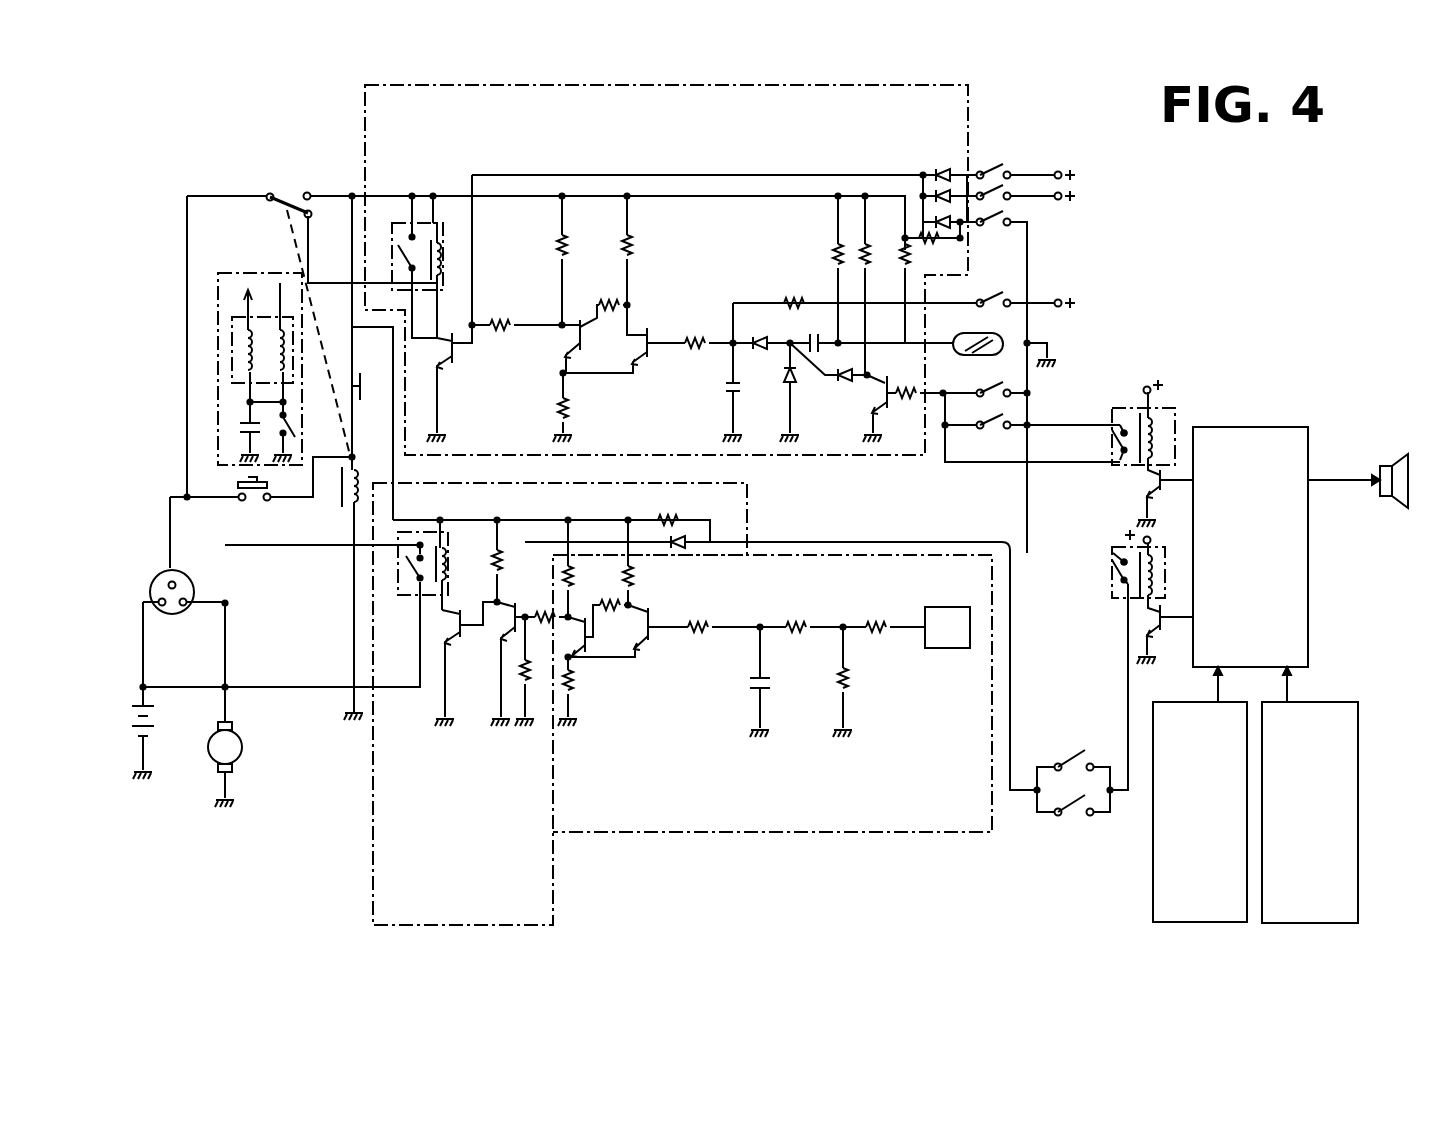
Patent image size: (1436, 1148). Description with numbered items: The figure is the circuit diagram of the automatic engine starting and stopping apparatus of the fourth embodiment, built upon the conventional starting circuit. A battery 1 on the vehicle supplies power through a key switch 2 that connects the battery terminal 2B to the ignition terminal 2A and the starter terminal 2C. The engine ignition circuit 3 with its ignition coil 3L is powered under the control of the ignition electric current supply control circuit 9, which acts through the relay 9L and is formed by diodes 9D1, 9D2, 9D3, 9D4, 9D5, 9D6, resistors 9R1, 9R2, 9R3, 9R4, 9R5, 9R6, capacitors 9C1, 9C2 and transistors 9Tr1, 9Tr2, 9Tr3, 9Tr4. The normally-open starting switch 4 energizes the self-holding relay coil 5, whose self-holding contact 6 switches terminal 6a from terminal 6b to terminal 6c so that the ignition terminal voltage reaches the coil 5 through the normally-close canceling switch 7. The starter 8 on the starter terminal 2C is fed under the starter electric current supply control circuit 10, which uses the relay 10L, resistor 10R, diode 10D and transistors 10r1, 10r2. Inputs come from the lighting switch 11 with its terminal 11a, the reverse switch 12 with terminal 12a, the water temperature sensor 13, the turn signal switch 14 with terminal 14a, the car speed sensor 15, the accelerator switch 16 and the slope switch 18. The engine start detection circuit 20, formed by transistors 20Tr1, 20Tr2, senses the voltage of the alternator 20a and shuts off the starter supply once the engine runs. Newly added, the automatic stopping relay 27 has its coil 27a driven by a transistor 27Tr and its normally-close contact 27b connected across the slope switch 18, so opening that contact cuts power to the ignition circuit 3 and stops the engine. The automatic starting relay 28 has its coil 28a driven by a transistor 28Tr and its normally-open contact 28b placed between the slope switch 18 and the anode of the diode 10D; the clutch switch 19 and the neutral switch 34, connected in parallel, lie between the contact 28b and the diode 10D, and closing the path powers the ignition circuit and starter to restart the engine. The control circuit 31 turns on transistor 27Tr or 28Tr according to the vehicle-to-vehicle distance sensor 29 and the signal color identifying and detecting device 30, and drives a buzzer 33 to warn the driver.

The battery 1 is at (160, 714).
The key switch 2 is at (165, 573).
The ignition terminal 2A is at (180, 580).
The battery terminal 2B is at (152, 597).
The starter terminal 2C is at (180, 612).
The engine ignition circuit 3 is at (232, 275).
The ignition coil 3L is at (218, 350).
The starting switch 4 is at (238, 482).
The self-holding relay coil 5 is at (341, 492).
The self-holding contact 6 is at (268, 193).
The terminal 6a is at (266, 203).
The terminal 6b is at (310, 220).
The terminal 6c is at (307, 192).
The canceling switch 7 is at (361, 373).
The starter 8 is at (243, 747).
The ignition electric current supply control circuit 9 is at (365, 140).
The relay 9L is at (440, 222).
The transistor 9Tr1 is at (870, 418).
The transistor 9Tr2 is at (645, 328).
The transistor 9Tr3 is at (572, 345).
The transistor 9Tr4 is at (447, 372).
The resistor 9R1 is at (936, 255).
The resistor 9R2 is at (905, 242).
The resistor 9R3 is at (865, 242).
The resistor 9R4 is at (838, 240).
The resistor 9R5 is at (793, 300).
The resistor 9R6 is at (697, 338).
The capacitor 9C1 is at (814, 333).
The capacitor 9C2 is at (727, 384).
The diode 9D1 is at (943, 168).
The diode 9D2 is at (950, 190).
The diode 9D3 is at (953, 228).
The diode 9D4 is at (845, 382).
The diode 9D5 is at (785, 378).
The diode 9D6 is at (758, 338).
The starter electric current supply control circuit 10 is at (752, 518).
The relay 10L is at (448, 540).
The resistor 10R is at (662, 518).
The diode 10D is at (686, 549).
The transistor 10r1 is at (500, 614).
The transistor 10r2 is at (445, 647).
The lighting switch 11 is at (990, 168).
The terminal 11a is at (1062, 170).
The reverse switch 12 is at (1012, 190).
The terminal 12a is at (1062, 202).
The water temperature sensor 13 is at (1010, 226).
The turn signal switch 14 is at (1000, 298).
The terminal 14a is at (1057, 325).
The car speed sensor 15 is at (976, 334).
The accelerator switch 16 is at (990, 388).
The slope switch 18 is at (1020, 420).
The clutch switch 19 is at (1075, 760).
The engine start detection circuit 20 is at (1008, 645).
The transistor 20Tr1 is at (645, 642).
The transistor 20Tr2 is at (578, 652).
The alternator 20a is at (940, 650).
The automatic stopping relay 27 is at (1112, 440).
The coil 27a is at (1162, 400).
The normally-close contact 27b is at (1112, 424).
The transistor 27Tr is at (1165, 470).
The automatic starting relay 28 is at (1112, 580).
The coil 28a is at (1148, 546).
The normally-open contact 28b is at (1118, 556).
The transistor 28Tr is at (1157, 635).
The vehicle-to-vehicle distance sensor 29 is at (1153, 885).
The signal color identifying and detecting device 30 is at (1358, 868).
The control circuit 31 is at (1308, 590).
The buzzer 33 is at (1402, 508).
The neutral switch 34 is at (1078, 818).